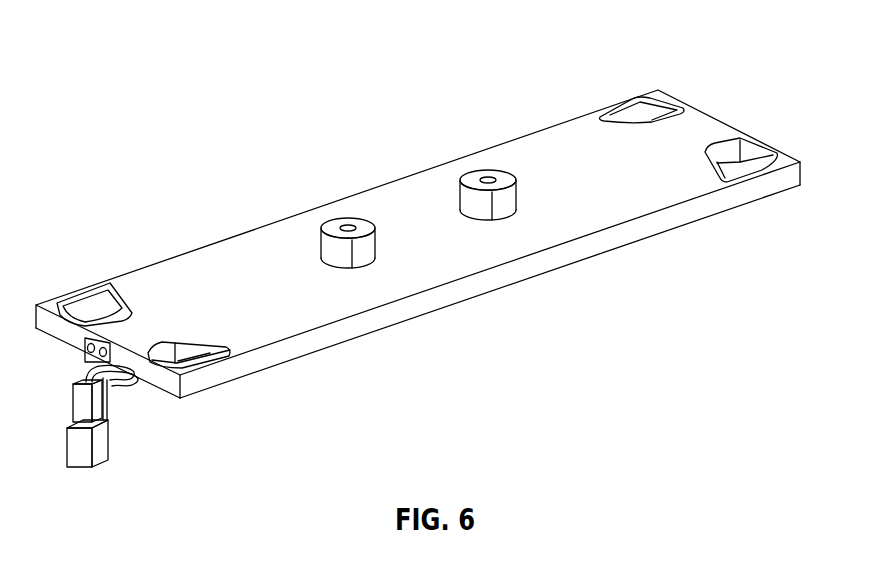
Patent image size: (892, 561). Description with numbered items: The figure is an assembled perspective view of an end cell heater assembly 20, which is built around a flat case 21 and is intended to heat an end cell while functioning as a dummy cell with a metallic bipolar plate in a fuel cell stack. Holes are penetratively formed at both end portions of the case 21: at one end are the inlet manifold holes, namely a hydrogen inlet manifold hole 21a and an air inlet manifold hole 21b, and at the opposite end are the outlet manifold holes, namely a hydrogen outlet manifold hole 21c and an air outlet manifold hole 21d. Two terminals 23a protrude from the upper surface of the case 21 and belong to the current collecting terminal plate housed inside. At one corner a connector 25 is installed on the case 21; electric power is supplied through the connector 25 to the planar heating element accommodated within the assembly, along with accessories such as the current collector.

The end cell heater assembly 20 is at (433, 247).
The case 21 is at (306, 316).
The hydrogen inlet manifold hole 21a is at (83, 303).
The air inlet manifold hole 21b is at (197, 353).
The hydrogen outlet manifold hole 21c is at (743, 170).
The air outlet manifold hole 21d is at (645, 108).
The terminal 23a is at (334, 228).
The connector 25 is at (98, 447).